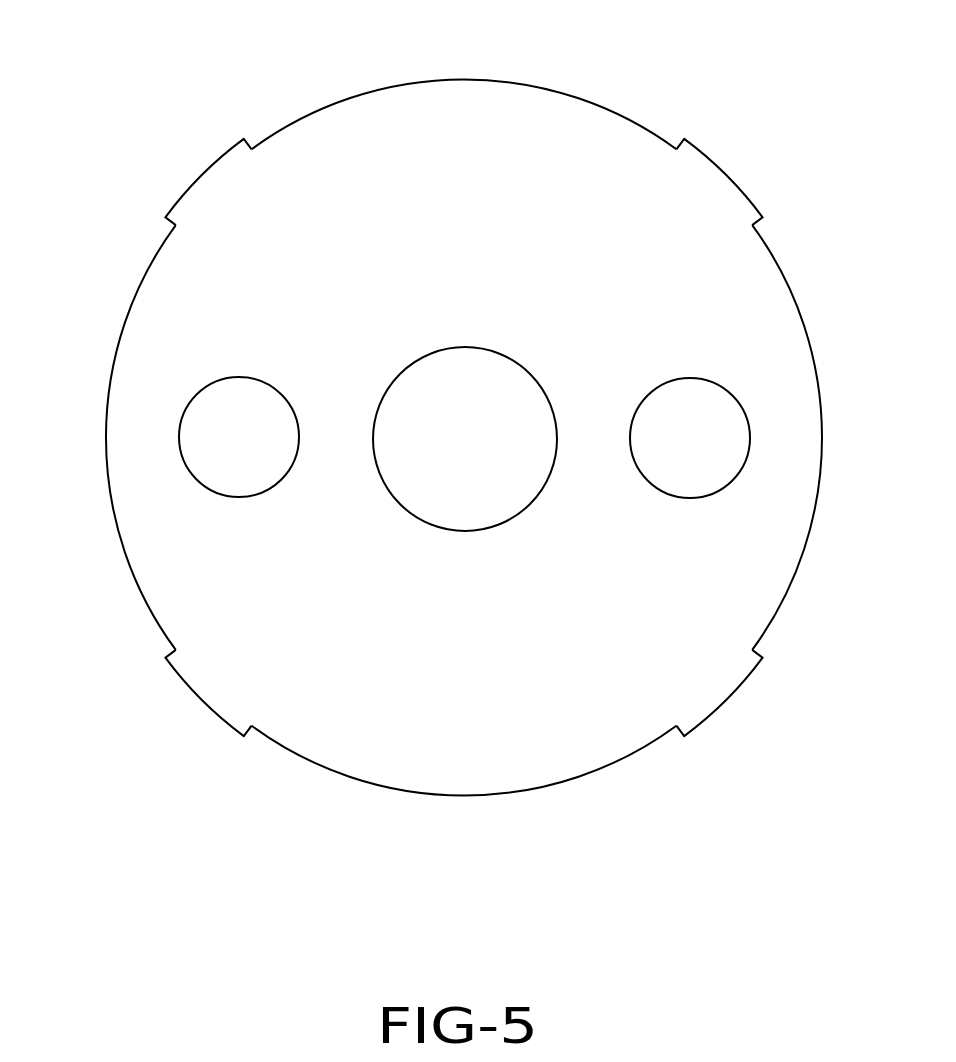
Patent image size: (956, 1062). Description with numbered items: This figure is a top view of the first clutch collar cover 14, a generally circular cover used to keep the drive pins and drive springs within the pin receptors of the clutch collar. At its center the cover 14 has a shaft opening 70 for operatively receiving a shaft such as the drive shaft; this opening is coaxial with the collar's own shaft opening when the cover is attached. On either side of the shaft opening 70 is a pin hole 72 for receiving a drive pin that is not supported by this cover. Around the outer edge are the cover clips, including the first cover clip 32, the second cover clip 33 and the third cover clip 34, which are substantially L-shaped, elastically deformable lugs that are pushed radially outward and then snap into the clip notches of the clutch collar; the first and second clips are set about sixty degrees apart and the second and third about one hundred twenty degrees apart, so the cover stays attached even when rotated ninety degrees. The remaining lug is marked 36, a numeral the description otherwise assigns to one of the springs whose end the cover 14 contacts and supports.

The clutch collar cover 14 is at (440, 140).
The second cover clip 33 is at (223, 170).
The third cover clip 34 is at (697, 168).
The first cover clip 32 is at (205, 693).
The spring 36 is at (705, 708).
The shaft opening 70 is at (455, 478).
The pin hole 72 is at (223, 433).